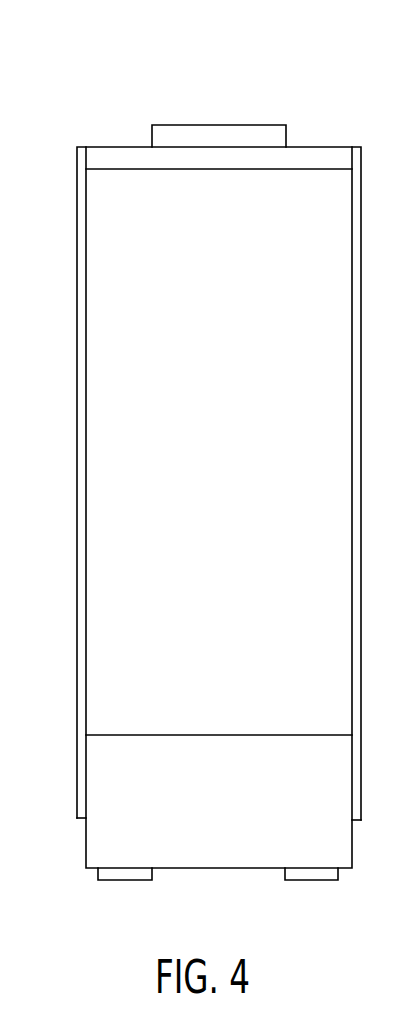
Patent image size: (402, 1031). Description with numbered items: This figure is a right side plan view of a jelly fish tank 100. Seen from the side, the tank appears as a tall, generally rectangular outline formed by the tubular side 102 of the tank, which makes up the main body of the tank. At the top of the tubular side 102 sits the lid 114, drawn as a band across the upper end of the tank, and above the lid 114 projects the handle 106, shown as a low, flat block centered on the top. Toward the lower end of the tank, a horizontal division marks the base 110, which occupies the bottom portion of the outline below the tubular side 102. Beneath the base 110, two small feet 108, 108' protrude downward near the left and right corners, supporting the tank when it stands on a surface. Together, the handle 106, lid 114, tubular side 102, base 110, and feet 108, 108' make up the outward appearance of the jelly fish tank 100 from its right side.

The jelly fish tank 100 is at (316, 76).
The tubular side 102 is at (97, 372).
The handle 106 is at (218, 122).
The foot 108 is at (311, 901).
The foot 108' is at (125, 901).
The base 110 is at (103, 828).
The lid 114 is at (121, 160).